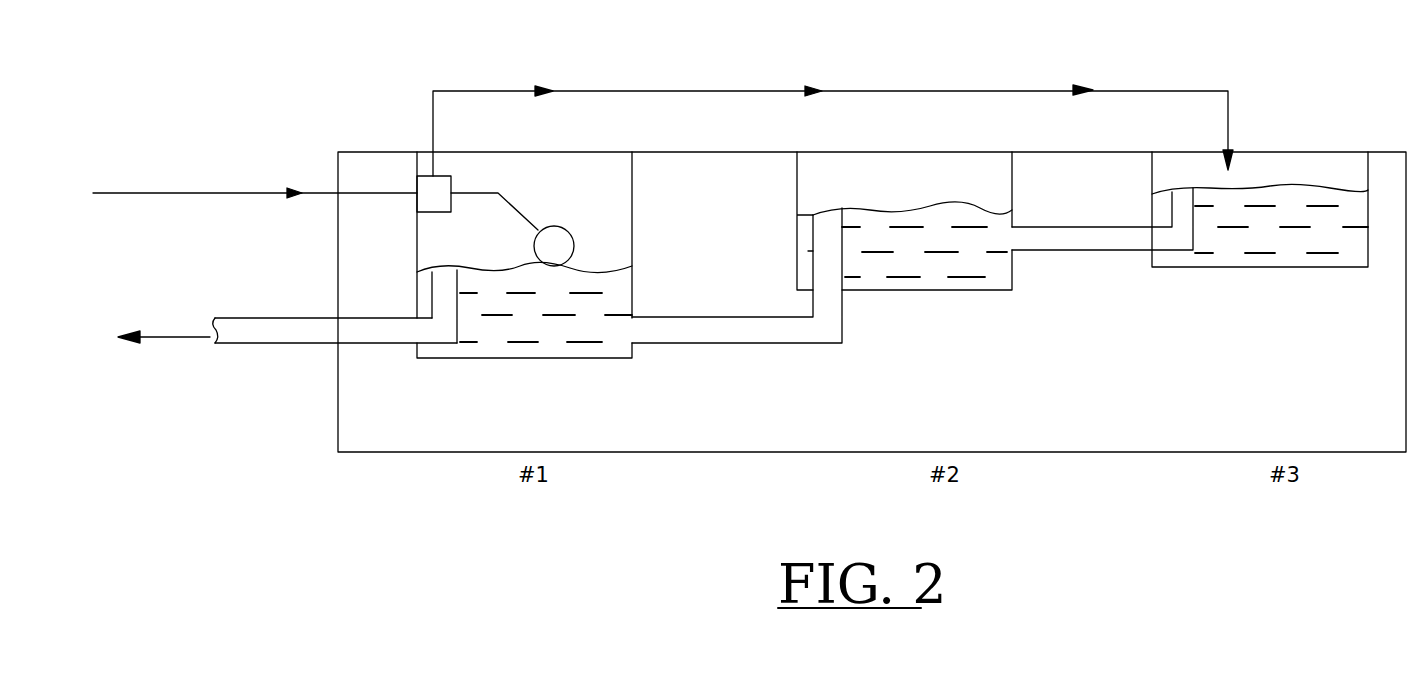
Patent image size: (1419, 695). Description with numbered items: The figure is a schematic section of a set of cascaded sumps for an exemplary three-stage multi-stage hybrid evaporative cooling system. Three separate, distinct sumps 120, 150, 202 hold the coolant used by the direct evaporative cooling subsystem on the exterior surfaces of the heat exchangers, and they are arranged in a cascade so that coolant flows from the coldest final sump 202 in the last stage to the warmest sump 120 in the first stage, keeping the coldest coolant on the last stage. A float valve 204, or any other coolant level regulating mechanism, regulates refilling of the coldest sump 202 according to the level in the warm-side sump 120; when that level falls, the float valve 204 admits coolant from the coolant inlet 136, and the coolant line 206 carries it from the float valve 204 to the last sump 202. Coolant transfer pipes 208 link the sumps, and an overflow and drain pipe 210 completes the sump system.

The sump 120 is at (497, 342).
The coolant inlet 136 is at (430, 188).
The sump 150 is at (930, 273).
The sump 202 is at (1285, 247).
The float valve 204 is at (554, 238).
The coolant line 206 is at (675, 91).
The coolant transfer pipes 208 is at (707, 337).
The overflow pipe 210 is at (268, 340).